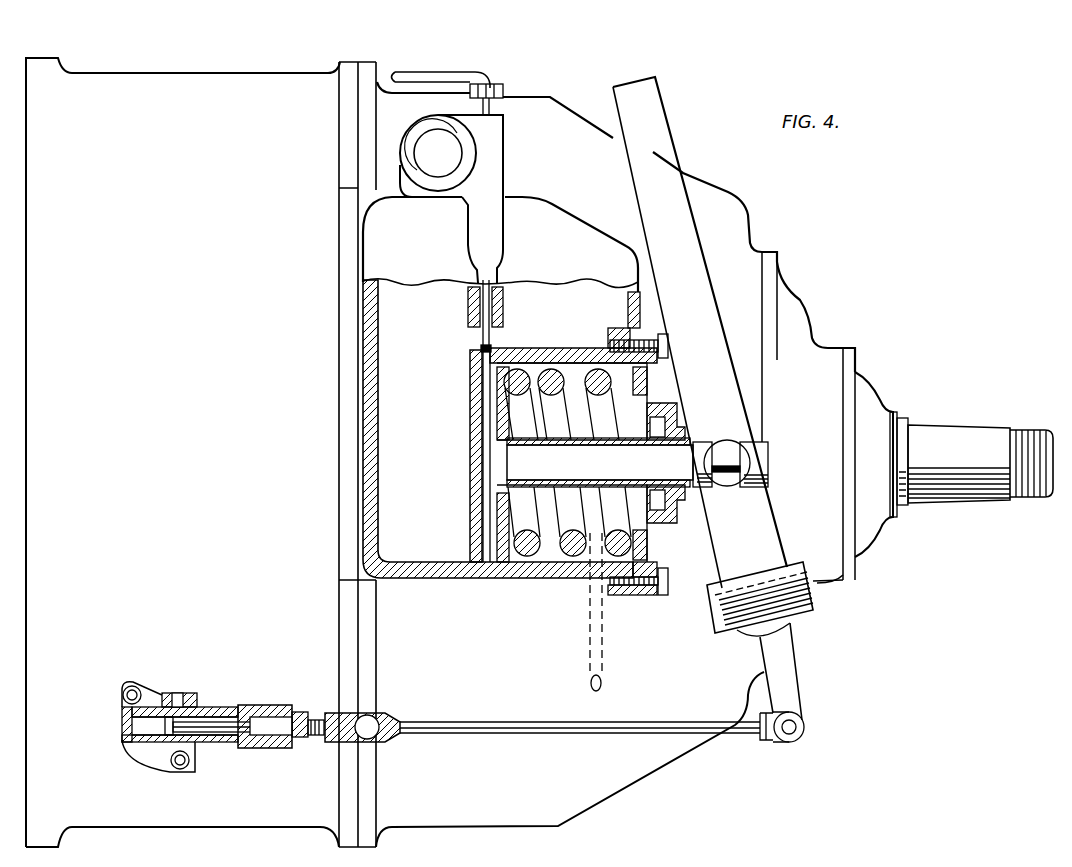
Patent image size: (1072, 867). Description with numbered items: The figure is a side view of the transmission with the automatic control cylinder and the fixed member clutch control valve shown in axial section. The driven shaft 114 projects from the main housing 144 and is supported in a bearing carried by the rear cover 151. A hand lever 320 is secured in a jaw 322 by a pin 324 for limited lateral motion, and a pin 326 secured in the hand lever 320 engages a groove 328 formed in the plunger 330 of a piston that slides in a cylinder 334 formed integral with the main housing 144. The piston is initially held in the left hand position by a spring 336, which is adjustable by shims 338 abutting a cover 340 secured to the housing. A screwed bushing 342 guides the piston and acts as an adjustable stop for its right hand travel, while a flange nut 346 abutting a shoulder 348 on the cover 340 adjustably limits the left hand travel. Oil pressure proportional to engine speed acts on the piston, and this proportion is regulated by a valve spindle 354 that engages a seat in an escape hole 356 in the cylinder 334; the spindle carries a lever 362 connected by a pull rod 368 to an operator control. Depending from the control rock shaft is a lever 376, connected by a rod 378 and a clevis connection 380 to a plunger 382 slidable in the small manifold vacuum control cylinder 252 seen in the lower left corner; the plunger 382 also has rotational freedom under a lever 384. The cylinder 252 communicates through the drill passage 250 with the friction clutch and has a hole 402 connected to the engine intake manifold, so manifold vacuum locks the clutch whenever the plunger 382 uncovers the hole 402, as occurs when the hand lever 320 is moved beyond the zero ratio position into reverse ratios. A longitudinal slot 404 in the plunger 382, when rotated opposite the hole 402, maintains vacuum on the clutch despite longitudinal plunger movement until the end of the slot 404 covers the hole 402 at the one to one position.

The driven shaft 114 is at (950, 434).
The main housing 144 is at (571, 222).
The rear cover 151 is at (833, 575).
The drill passage 250 is at (124, 735).
The manifold vacuum control cylinder 252 is at (145, 742).
The hand lever 320 is at (668, 146).
The jaw 322 is at (502, 405).
The pin 324 is at (712, 599).
The pin 326 is at (727, 447).
The groove 328 is at (727, 488).
The plunger 330 is at (772, 447).
The cylinder 334 is at (528, 352).
The spring 336 is at (561, 370).
The shims 338 is at (652, 556).
The cover 340 is at (652, 565).
The screwed bushing 342 is at (600, 462).
The flange nut 346 is at (674, 410).
The shoulder 348 is at (668, 392).
The valve spindle 354 is at (492, 110).
The escape hole 356 is at (484, 365).
The lever 362 is at (503, 90).
The pull rod 368 is at (420, 78).
The lever 376 is at (788, 680).
The rod 378 is at (652, 723).
The clevis connection 380 is at (378, 715).
The plunger 382 is at (236, 720).
The lever 384 is at (298, 712).
The hole 402 is at (178, 693).
The longitudinal slot 404 is at (208, 722).